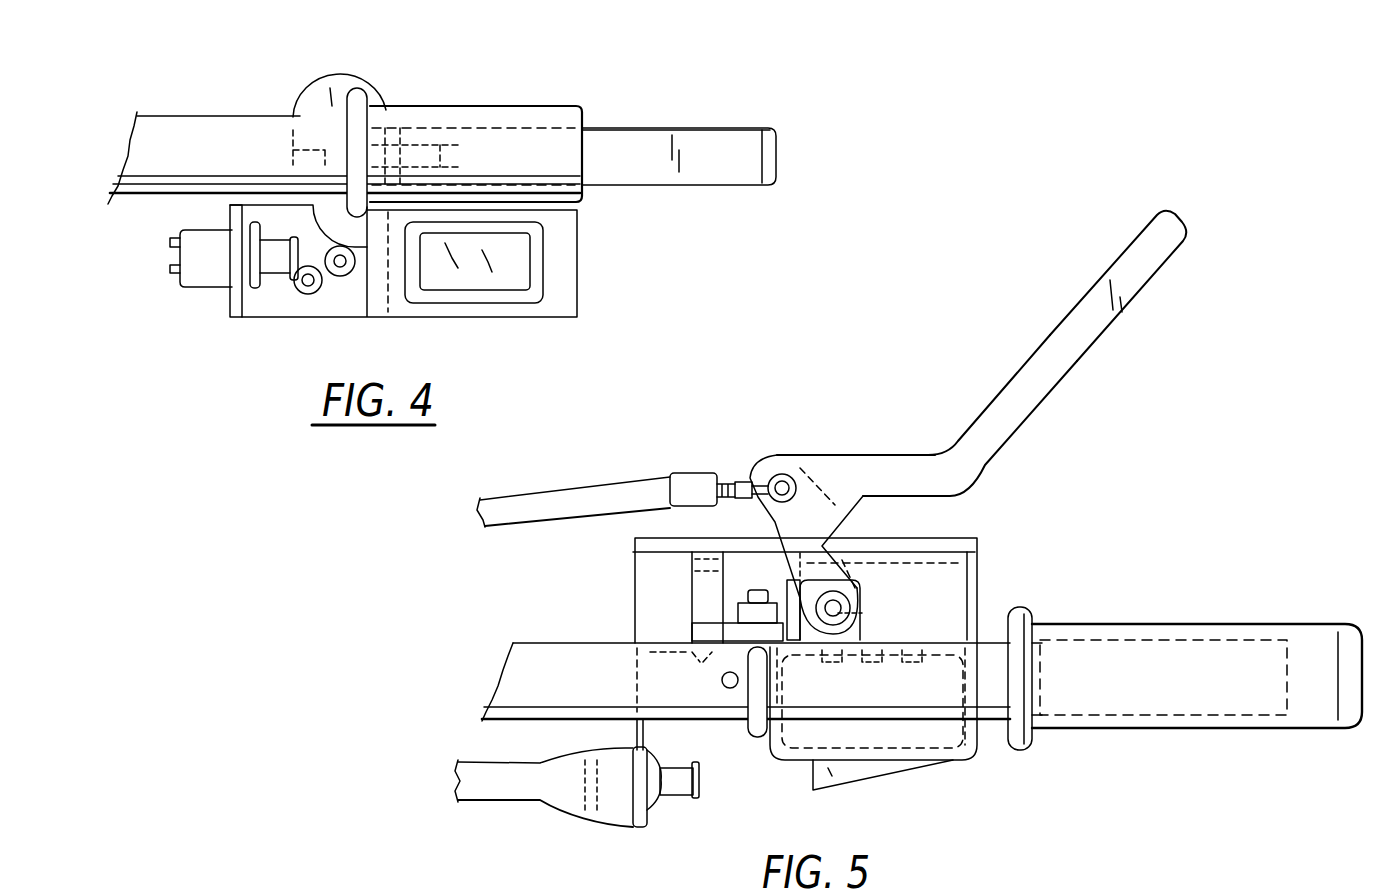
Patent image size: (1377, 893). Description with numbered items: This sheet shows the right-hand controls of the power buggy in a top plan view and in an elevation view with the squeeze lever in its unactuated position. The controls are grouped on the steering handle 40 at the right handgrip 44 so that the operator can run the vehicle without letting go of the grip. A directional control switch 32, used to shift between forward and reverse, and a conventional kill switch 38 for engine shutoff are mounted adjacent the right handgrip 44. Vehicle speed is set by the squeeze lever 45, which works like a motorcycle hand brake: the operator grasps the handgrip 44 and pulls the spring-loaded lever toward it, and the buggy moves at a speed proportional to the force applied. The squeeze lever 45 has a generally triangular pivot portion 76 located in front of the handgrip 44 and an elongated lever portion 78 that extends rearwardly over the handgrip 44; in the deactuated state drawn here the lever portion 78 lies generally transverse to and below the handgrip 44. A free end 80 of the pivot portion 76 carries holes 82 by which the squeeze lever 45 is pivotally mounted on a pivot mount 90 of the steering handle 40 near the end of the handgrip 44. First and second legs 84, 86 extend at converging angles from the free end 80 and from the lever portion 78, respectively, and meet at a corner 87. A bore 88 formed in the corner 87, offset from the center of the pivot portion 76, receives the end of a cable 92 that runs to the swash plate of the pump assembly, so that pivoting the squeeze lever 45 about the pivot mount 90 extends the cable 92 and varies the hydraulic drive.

In FIG. 4, the directional control switch 32 is at (468, 268).
In FIG. 5, the directional control switch 32 is at (855, 787).
In FIG. 4, the kill switch 38 is at (307, 292).
In FIG. 5, the kill switch 38 is at (702, 783).
In FIG. 4, the steering handle 40 is at (238, 63).
In FIG. 5, the steering handle 40 is at (571, 636).
In FIG. 4, the right handgrip 44 is at (531, 104).
In FIG. 5, the right handgrip 44 is at (1210, 588).
In FIG. 4, the squeeze lever 45 is at (668, 128).
In FIG. 5, the squeeze lever 45 is at (1058, 307).
In FIG. 5, the pivot portion 76 is at (832, 456).
In FIG. 4, the lever portion 78 is at (748, 128).
In FIG. 5, the lever portion 78 is at (1100, 280).
In FIG. 5, the free end 80 is at (840, 590).
In FIG. 5, the holes 82 is at (857, 597).
In FIG. 5, the first leg 84 is at (812, 588).
In FIG. 5, the second leg 86 is at (904, 480).
In FIG. 5, the corner 87 is at (764, 466).
In FIG. 5, the bore 88 is at (785, 476).
In FIG. 5, the pivot mount 90 is at (863, 613).
In FIG. 5, the cable 92 is at (732, 478).